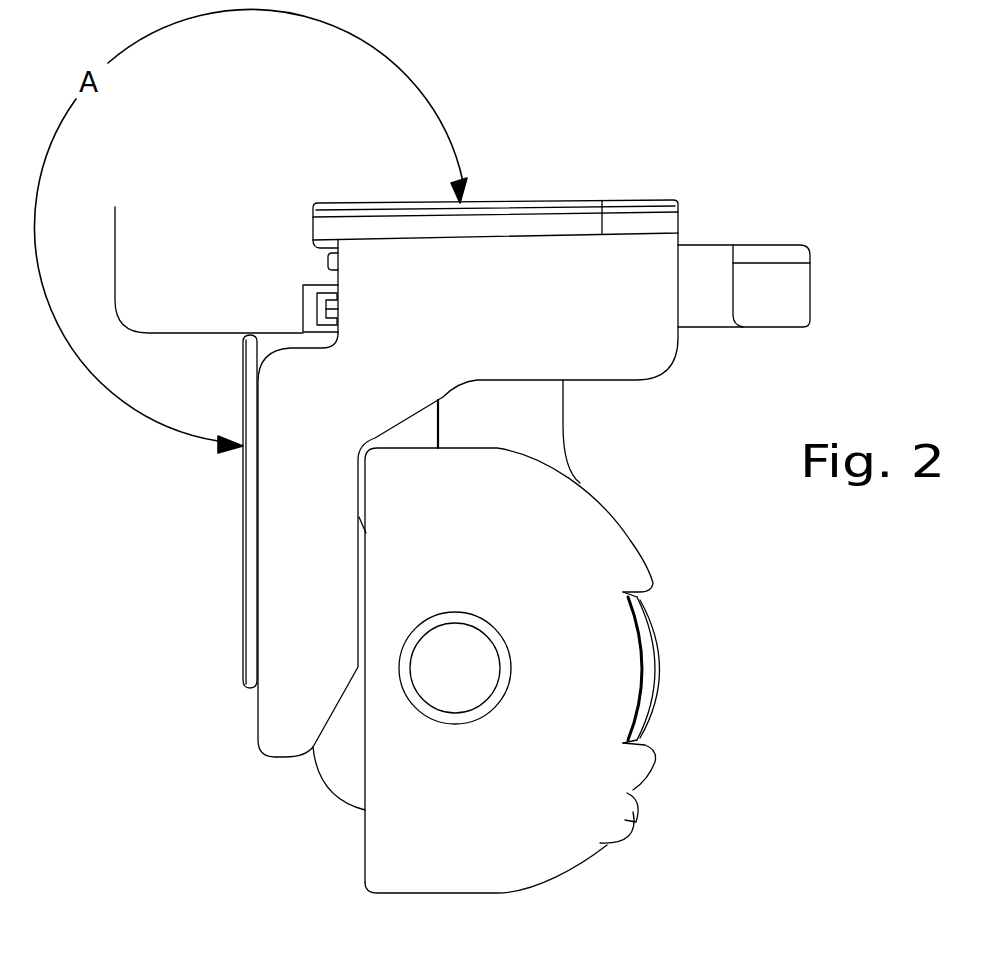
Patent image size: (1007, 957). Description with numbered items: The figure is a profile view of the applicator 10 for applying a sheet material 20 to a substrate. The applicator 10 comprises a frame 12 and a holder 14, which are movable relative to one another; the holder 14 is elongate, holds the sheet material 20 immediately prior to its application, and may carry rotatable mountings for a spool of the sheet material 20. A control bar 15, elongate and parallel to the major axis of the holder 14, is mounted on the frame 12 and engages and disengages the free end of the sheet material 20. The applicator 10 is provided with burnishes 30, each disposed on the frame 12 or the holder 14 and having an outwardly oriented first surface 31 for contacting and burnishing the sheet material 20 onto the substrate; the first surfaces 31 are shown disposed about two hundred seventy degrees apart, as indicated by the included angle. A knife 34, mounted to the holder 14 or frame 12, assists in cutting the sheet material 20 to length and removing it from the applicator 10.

The applicator 10 is at (692, 778).
The frame 12 is at (653, 338).
The holder 14 is at (688, 543).
The control bar 15 is at (303, 308).
The sheet material 20 is at (225, 350).
The burnish 30 is at (558, 198).
The first surface 31 is at (520, 200).
The knife 34 is at (312, 262).